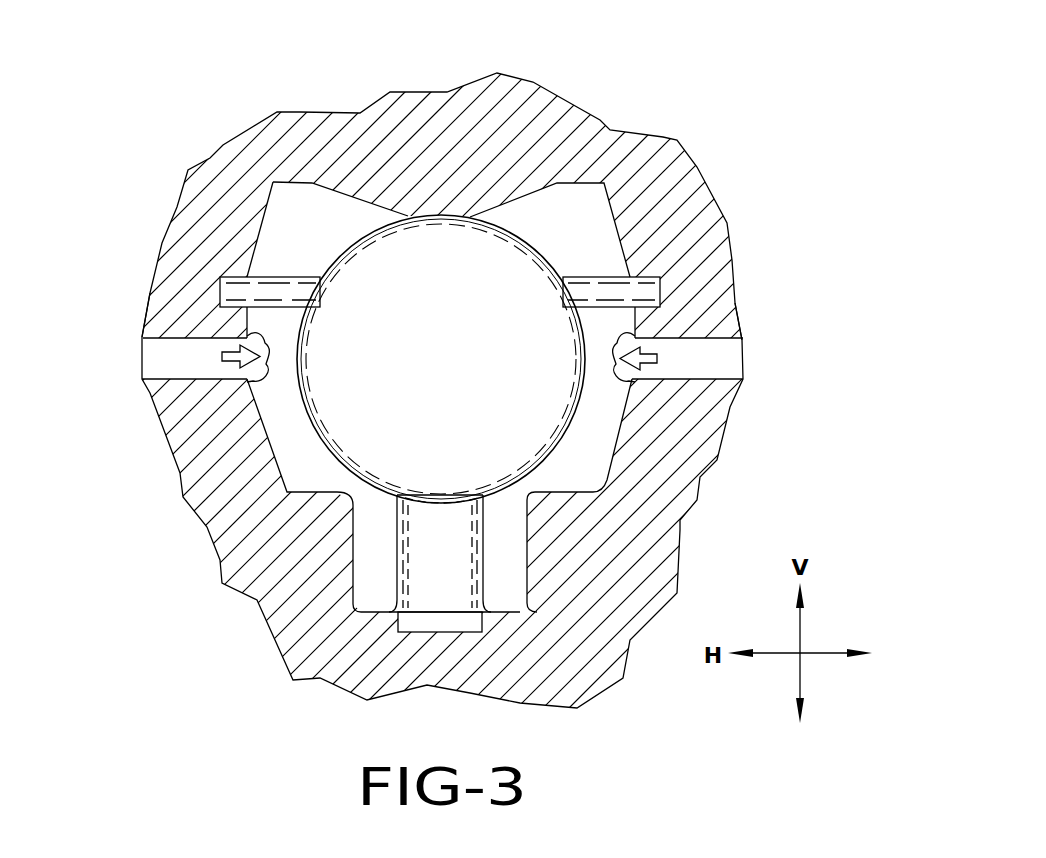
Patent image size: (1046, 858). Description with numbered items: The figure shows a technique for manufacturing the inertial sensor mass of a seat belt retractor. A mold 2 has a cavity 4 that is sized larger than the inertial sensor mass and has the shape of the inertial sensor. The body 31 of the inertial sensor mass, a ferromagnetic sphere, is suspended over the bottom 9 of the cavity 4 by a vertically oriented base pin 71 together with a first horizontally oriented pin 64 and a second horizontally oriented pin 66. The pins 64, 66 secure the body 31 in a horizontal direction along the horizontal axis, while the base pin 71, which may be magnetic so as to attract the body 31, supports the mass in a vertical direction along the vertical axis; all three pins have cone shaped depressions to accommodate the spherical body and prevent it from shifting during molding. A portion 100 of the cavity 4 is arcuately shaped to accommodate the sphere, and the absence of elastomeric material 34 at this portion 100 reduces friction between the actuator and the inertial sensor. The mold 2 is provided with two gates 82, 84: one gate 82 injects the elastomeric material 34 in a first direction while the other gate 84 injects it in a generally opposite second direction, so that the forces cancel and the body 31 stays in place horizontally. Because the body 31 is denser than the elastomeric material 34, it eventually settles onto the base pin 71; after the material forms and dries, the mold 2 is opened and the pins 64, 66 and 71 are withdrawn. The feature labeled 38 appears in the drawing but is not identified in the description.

The portion of the mold cavity 100 is at (430, 213).
The body of the inertial sensor mass 31 is at (527, 270).
The first horizontally oriented pin 64 is at (278, 288).
The second horizontally oriented pin 66 is at (603, 288).
The gate 82 is at (177, 337).
The gate 84 is at (700, 335).
The elastomeric material 34 is at (162, 358).
The socket inner surface 38 is at (303, 412).
The cavity 4 is at (592, 438).
The mold 2 is at (285, 557).
The vertically oriented base pin 71 is at (433, 612).
The bottom of the cavity 9 is at (517, 612).